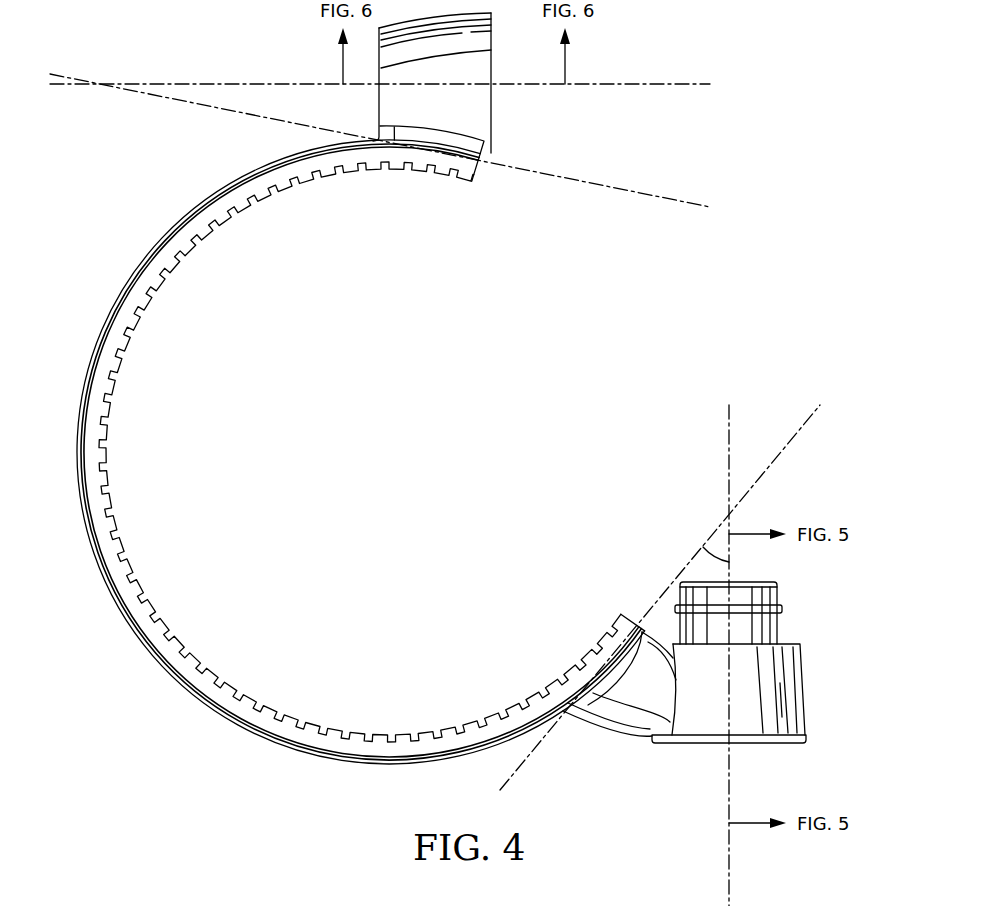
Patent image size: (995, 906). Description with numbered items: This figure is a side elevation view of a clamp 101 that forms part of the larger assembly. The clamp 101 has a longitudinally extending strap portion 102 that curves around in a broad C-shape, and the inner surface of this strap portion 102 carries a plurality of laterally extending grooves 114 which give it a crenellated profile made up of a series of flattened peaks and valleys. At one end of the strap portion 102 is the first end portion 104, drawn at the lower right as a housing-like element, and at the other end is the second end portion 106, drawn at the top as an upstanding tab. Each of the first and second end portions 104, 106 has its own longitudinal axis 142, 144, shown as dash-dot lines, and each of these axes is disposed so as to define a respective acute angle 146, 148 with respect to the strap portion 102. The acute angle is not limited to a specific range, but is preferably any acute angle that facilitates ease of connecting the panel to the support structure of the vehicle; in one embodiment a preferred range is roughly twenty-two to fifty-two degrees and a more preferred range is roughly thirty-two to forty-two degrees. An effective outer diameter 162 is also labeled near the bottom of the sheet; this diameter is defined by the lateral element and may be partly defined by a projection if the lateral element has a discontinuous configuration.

The clamp 101 is at (360, 452).
The longitudinally extending strap portion 102 is at (186, 688).
The first end portion 104 is at (823, 650).
The second end portion 106 is at (512, 132).
The laterally extending grooves 114 is at (342, 168).
The longitudinal axis 142 is at (729, 889).
The longitudinal axis 144 is at (380, 65).
The acute angle 146 is at (720, 548).
The acute angle 148 is at (205, 84).
The effective outer diameter 162 is at (263, 893).